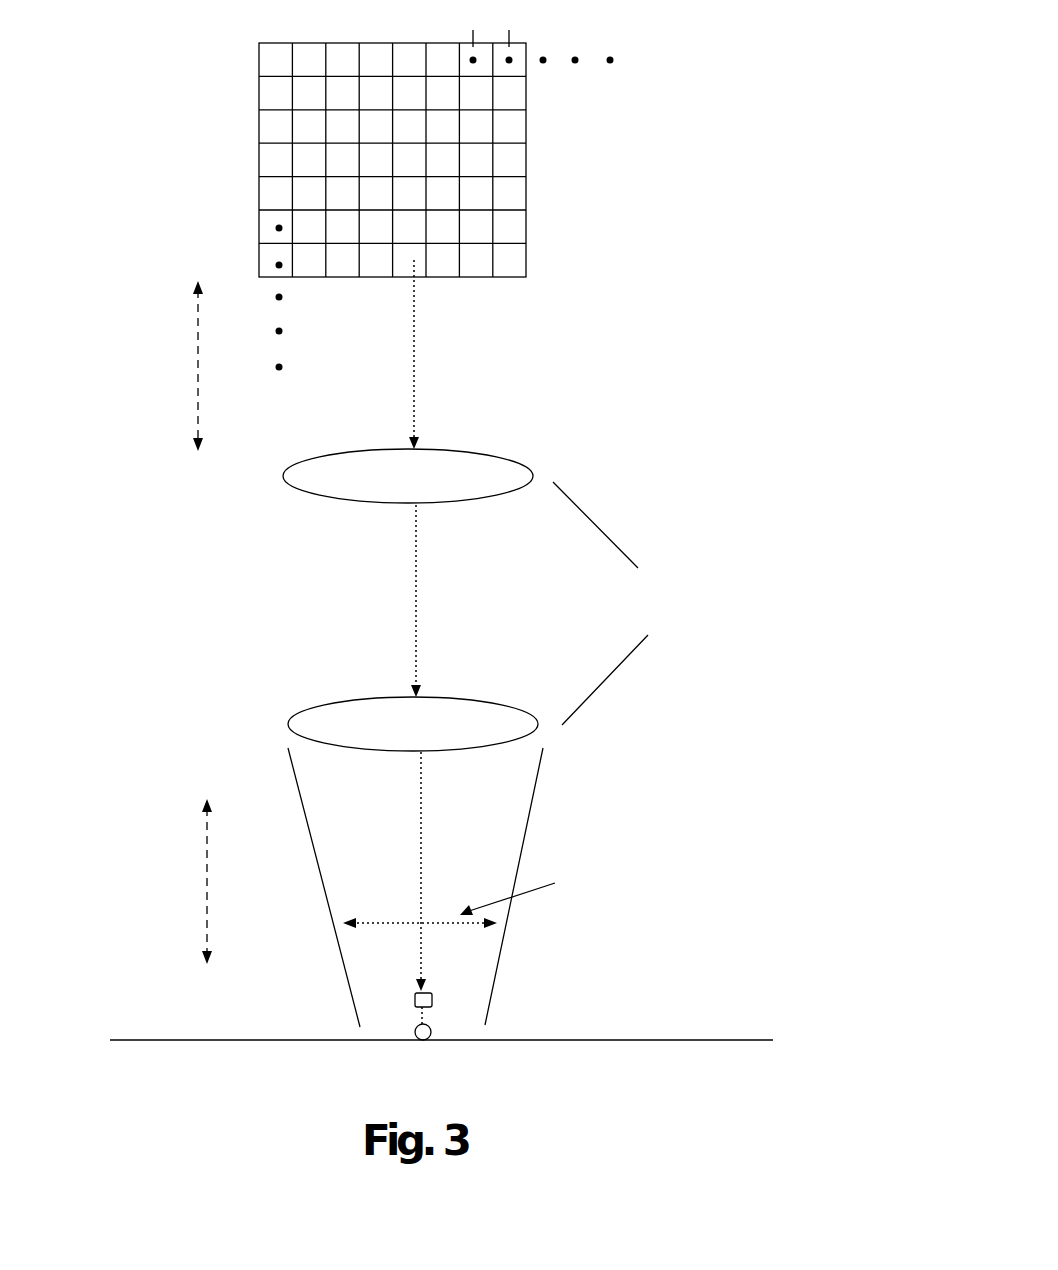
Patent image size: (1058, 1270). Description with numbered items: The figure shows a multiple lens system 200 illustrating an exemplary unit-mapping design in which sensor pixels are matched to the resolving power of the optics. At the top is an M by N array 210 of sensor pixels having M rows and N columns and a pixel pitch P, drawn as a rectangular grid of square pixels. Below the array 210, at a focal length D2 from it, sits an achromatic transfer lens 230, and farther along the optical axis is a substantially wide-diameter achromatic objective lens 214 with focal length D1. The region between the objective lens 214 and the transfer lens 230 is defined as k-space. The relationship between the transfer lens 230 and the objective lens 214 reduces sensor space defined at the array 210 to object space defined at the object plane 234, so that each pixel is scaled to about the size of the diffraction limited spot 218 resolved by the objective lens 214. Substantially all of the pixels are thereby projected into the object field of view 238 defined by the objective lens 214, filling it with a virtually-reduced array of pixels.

The multiple lens system 200 is at (708, 47).
The M by N array of sensor pixels 210 is at (528, 163).
The achromatic transfer lens 230 is at (500, 458).
The achromatic objective lens 214 is at (475, 698).
The object field of view 238 is at (433, 922).
The object plane 234 is at (520, 1038).
The diffraction limited spot 218 is at (431, 1038).